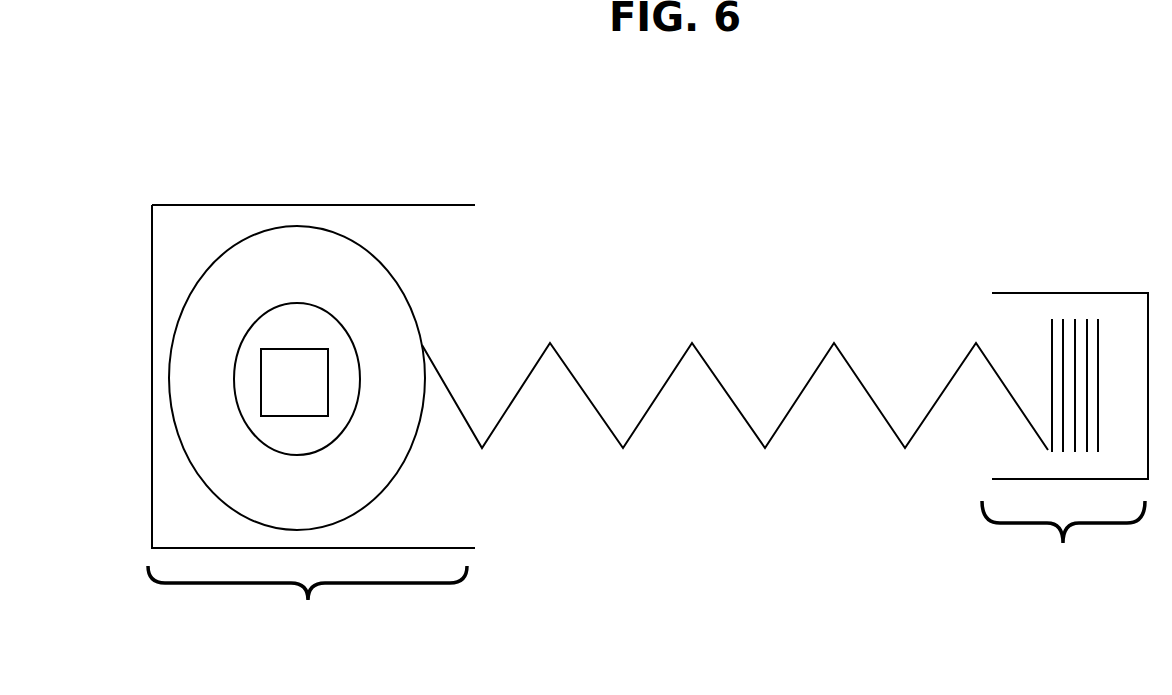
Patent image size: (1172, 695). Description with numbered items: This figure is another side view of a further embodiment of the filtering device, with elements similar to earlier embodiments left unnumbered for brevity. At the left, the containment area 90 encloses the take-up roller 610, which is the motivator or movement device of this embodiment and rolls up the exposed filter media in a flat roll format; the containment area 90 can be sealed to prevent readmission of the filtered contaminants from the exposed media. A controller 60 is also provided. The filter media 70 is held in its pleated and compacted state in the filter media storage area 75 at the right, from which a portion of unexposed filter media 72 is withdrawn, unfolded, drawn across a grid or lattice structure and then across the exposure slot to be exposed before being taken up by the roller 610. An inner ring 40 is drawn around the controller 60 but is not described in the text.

The take-up roller 610 is at (242, 280).
The controller 60 is at (273, 367).
The inner ring 40 is at (318, 325).
The filter media 70 is at (635, 370).
The unexposed filter media 72 is at (1069, 297).
The filter media storage area 75 is at (1065, 468).
The containment area 90 is at (311, 445).